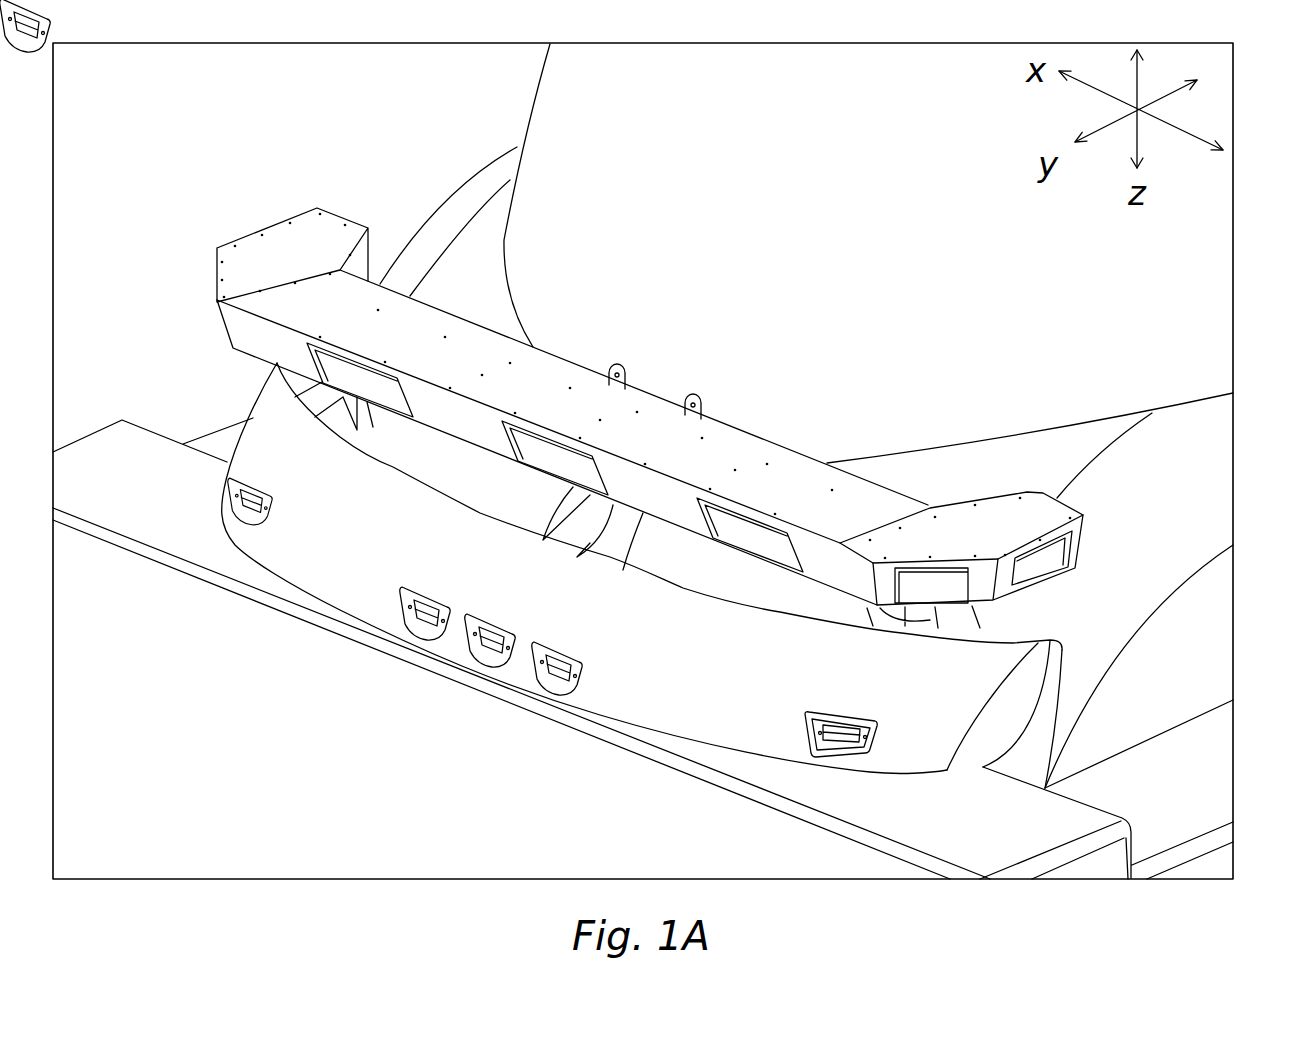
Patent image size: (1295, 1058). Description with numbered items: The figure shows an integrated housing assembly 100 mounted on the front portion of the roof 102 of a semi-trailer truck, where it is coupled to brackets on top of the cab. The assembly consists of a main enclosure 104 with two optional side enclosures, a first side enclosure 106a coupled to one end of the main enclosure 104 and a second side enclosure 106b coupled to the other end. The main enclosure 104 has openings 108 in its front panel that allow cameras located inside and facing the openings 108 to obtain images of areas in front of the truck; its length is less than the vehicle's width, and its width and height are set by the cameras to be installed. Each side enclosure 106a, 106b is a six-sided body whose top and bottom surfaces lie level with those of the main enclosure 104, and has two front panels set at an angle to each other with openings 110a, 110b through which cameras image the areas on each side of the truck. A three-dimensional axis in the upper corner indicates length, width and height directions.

The integrated housing assembly 100 is at (200, 265).
The roof 102 is at (1145, 468).
The main enclosure 104 is at (287, 348).
The first side enclosure 106a is at (277, 243).
The second side enclosure 106b is at (1085, 537).
The openings 108 is at (723, 528).
The opening 110a is at (1037, 570).
The opening 110b is at (953, 588).